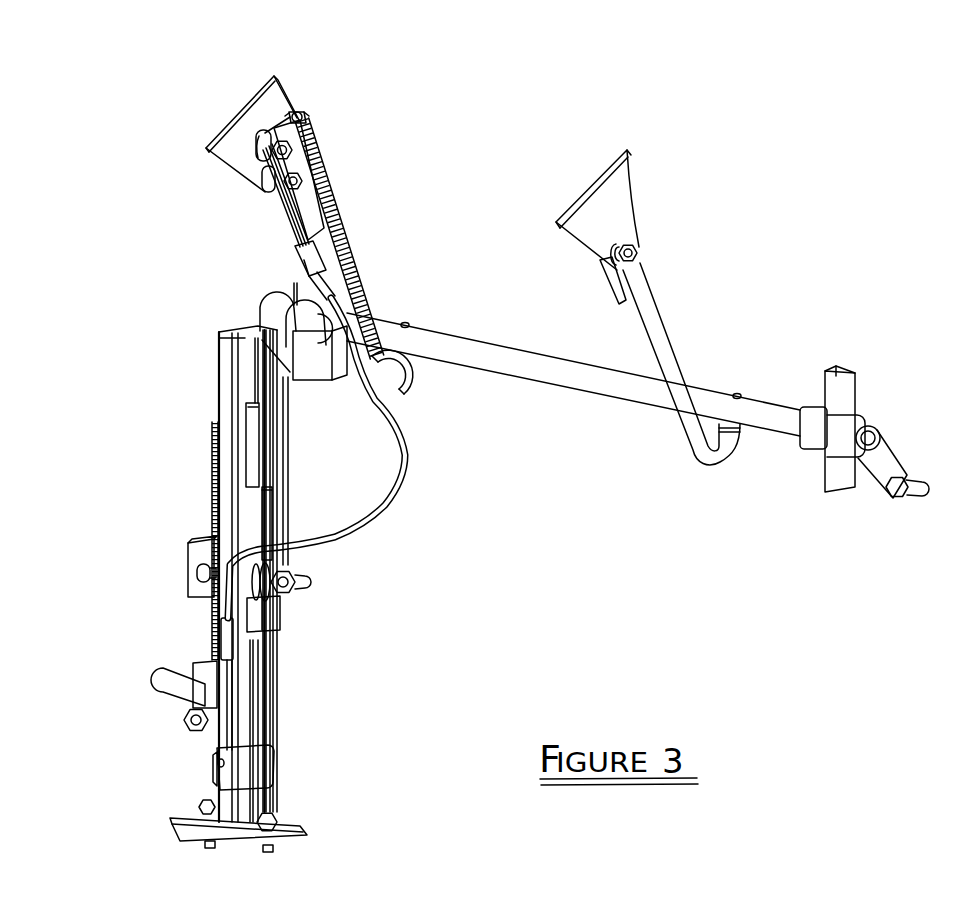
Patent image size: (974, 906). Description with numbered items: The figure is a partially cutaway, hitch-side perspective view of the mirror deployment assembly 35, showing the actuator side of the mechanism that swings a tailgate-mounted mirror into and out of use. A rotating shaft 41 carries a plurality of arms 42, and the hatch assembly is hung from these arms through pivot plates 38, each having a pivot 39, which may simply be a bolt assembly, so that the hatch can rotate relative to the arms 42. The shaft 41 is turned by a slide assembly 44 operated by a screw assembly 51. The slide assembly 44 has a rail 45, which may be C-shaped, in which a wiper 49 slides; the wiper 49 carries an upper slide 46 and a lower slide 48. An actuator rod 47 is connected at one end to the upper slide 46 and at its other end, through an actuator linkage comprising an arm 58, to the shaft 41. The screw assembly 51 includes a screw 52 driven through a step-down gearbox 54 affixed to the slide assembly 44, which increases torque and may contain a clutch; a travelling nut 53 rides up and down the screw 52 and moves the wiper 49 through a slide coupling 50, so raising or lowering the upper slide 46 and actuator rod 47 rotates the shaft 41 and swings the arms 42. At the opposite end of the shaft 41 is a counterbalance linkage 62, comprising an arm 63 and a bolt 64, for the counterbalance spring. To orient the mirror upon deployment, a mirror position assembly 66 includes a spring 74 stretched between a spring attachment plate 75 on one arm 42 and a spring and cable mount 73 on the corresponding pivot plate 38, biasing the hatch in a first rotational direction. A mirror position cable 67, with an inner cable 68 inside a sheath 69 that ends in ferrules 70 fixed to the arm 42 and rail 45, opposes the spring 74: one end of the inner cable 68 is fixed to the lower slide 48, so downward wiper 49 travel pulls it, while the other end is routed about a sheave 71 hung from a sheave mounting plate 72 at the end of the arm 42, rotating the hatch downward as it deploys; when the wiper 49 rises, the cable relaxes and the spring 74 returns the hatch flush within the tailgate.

The mirror deployment assembly 35 is at (655, 603).
The pivot plate 38 is at (272, 88).
The pivot 39 is at (302, 183).
The rotating shaft 41 is at (530, 353).
The arm 42 is at (388, 385).
The slide assembly 44 is at (310, 765).
The rail 45 is at (227, 360).
The upper slide 46 is at (270, 620).
The actuator rod 47 is at (283, 515).
The lower slide 48 is at (217, 770).
The wiper 49 is at (255, 470).
The slide coupling 50 is at (190, 548).
The screw assembly 51 is at (187, 498).
The screw 52 is at (213, 452).
The travelling nut 53 is at (198, 570).
The step-down gearbox 54 is at (192, 703).
The arm 58 is at (285, 345).
The counterbalance linkage 62 is at (858, 503).
The arm 63 is at (887, 460).
The bolt 64 is at (907, 505).
The mirror position assembly 66 is at (152, 240).
The mirror position cable 67 is at (417, 443).
The inner cable 68 is at (285, 197).
The sheath 69 is at (368, 527).
The ferrule 70 is at (297, 253).
The sheave 71 is at (250, 152).
The sheave mounting plate 72 is at (310, 218).
The spring and cable mount 73 is at (302, 112).
The spring 74 is at (350, 305).
The spring attachment plate 75 is at (378, 365).